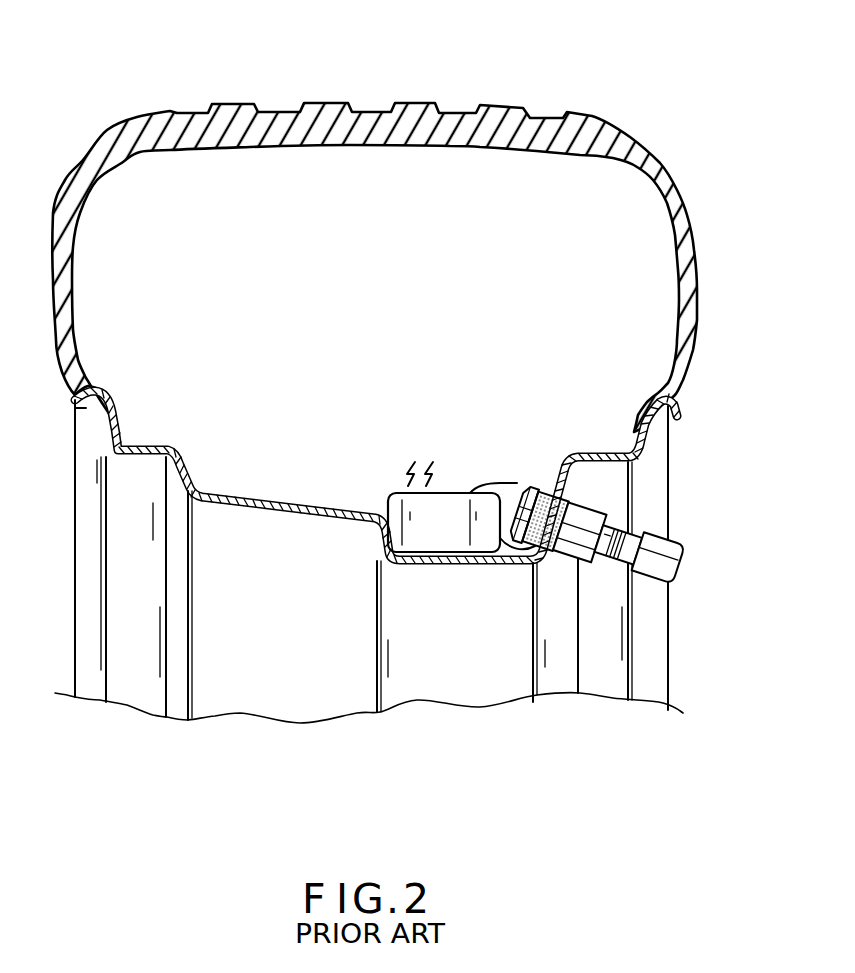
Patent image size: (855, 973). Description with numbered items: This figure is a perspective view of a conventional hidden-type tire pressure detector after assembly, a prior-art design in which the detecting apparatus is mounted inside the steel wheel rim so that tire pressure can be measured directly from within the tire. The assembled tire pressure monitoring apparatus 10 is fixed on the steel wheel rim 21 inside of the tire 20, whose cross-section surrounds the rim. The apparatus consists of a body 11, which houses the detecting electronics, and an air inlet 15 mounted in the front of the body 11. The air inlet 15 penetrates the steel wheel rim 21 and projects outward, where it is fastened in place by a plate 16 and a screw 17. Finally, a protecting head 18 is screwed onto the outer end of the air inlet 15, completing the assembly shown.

The tire 20 is at (453, 124).
The steel wheel rim 21 is at (500, 561).
The tire pressure monitoring apparatus 10 is at (486, 462).
The body 11 is at (440, 538).
The plate 16 is at (557, 487).
The screw 17 is at (583, 517).
The air inlet 15 is at (627, 523).
The protecting head 18 is at (676, 565).